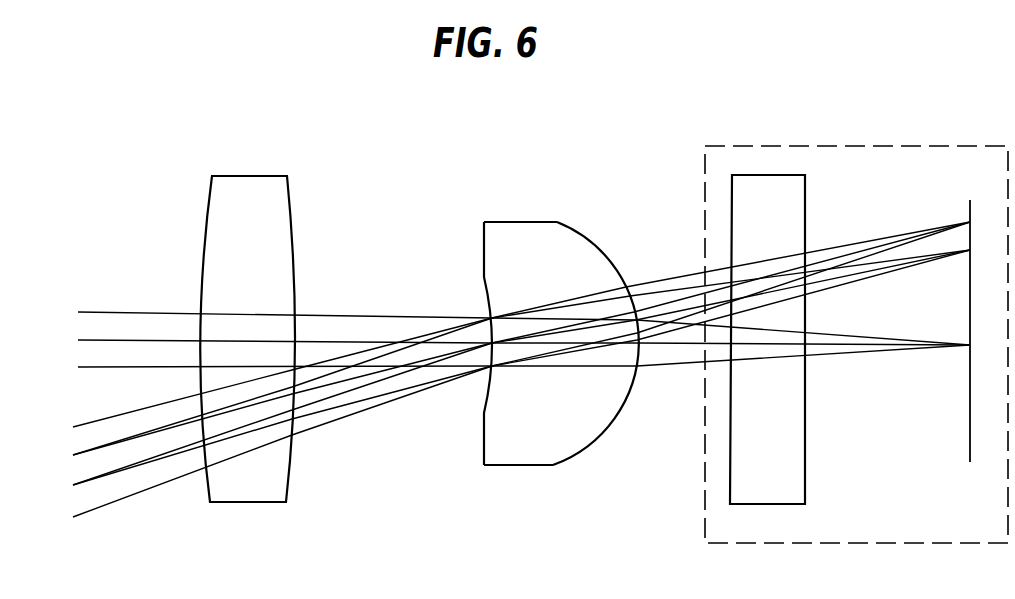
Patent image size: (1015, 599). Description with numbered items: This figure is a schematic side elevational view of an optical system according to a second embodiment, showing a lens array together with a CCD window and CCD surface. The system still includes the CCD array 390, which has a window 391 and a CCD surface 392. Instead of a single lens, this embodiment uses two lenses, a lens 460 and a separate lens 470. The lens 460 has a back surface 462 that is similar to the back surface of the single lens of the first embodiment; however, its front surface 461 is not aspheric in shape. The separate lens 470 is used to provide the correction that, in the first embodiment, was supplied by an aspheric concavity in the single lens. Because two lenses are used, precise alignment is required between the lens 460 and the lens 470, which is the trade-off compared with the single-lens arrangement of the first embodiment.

The lens 470 is at (268, 167).
The lens 460 is at (551, 326).
The front surface 461 is at (484, 416).
The back surface 462 is at (590, 237).
The CCD array 390 is at (856, 328).
The window 391 is at (805, 436).
The CCD surface 392 is at (970, 462).